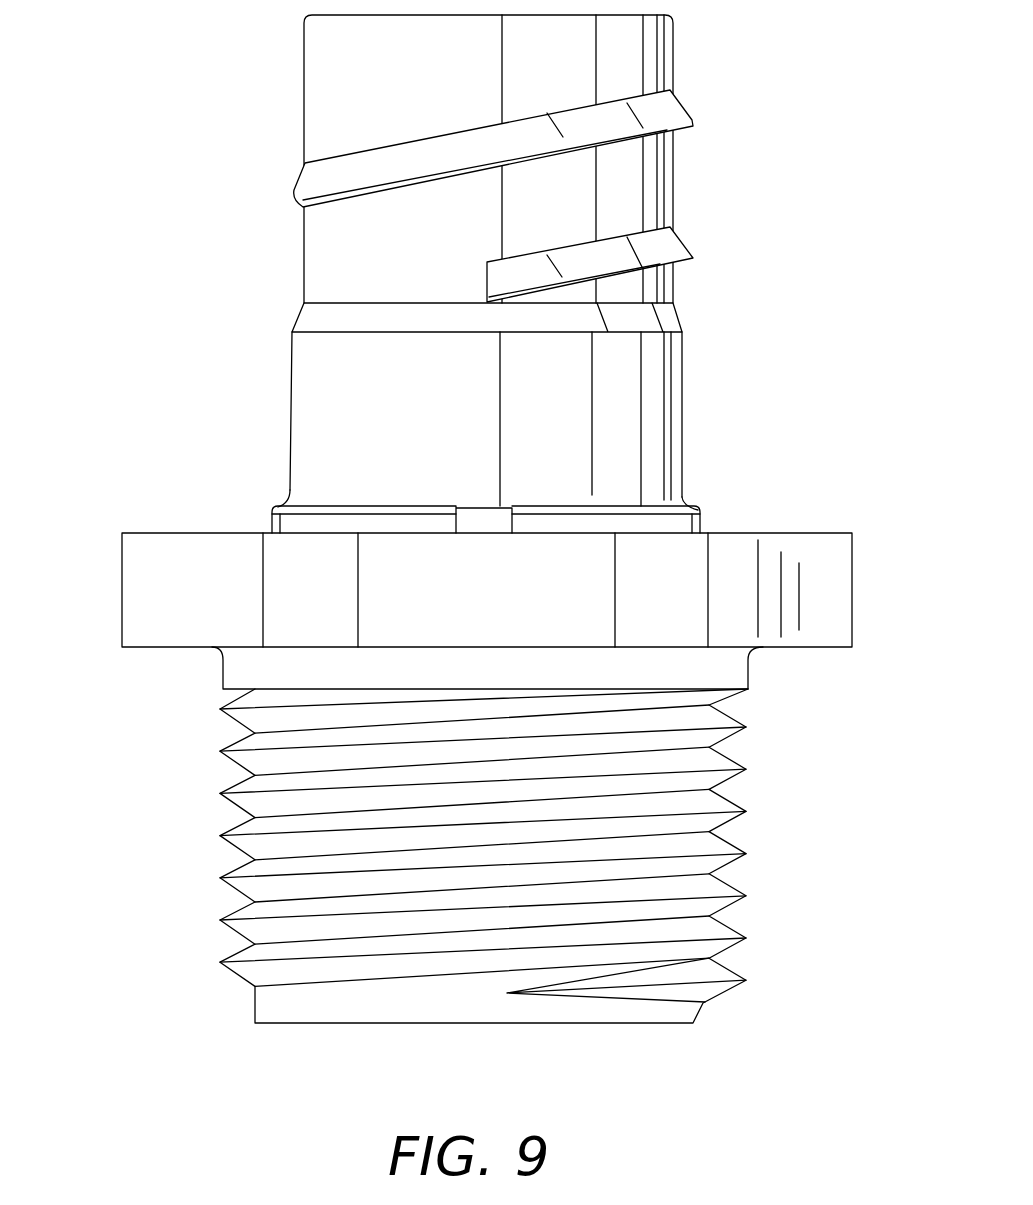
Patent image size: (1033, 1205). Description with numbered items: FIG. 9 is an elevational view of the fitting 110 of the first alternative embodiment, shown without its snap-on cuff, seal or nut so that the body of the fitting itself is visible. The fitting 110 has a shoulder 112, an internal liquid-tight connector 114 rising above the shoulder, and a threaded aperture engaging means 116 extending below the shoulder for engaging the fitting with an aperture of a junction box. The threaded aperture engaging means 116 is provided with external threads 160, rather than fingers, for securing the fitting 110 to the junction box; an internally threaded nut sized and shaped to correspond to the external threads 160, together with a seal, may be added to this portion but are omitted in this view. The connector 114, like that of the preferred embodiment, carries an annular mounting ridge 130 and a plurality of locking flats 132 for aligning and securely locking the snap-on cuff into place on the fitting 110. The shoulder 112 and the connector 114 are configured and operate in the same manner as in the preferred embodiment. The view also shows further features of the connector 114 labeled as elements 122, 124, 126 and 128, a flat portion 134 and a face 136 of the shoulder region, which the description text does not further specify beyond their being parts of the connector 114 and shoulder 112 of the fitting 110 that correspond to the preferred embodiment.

The fitting 110 is at (834, 487).
The shoulder 112 is at (145, 608).
The internal liquid-tight connector 114 is at (268, 165).
The threaded aperture engaging means 116 is at (290, 845).
The upper cylindrical portion 122 is at (627, 40).
The lower cylindrical portion 124 is at (652, 405).
The shoulder 126 is at (675, 313).
The helical lugs 128 is at (683, 247).
The annular mounting ridge 130 is at (630, 508).
The locking flats 132 is at (692, 522).
The collar tabs 134 is at (553, 522).
The flange face 136 is at (486, 590).
The external threads 160 is at (220, 837).